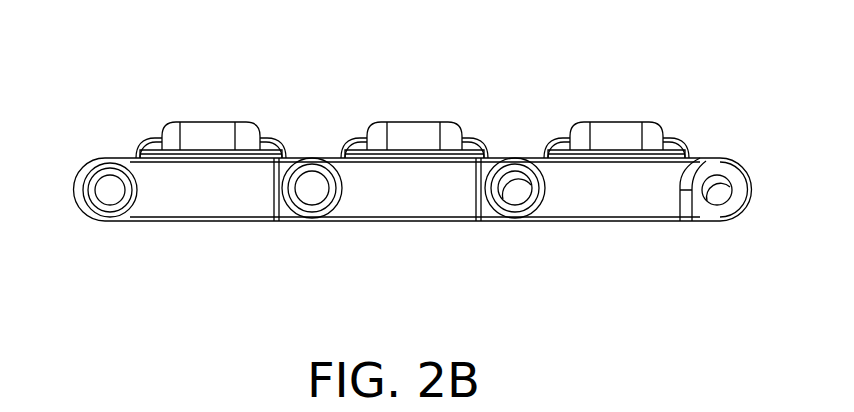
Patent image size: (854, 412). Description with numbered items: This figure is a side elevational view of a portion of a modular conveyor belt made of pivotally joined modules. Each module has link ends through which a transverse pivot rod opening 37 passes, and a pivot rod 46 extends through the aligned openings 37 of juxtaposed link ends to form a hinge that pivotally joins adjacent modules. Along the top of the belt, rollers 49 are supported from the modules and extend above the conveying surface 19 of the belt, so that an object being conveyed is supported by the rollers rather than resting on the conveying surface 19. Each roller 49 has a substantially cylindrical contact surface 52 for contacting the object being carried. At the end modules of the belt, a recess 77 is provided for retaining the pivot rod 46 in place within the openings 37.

The conveying surface 19 is at (124, 158).
The transverse pivot rod opening 37 is at (110, 192).
The pivot rod 46 is at (311, 190).
The roller 49 is at (420, 135).
The substantially cylindrical contact surface 52 is at (625, 121).
The recess 77 is at (125, 205).